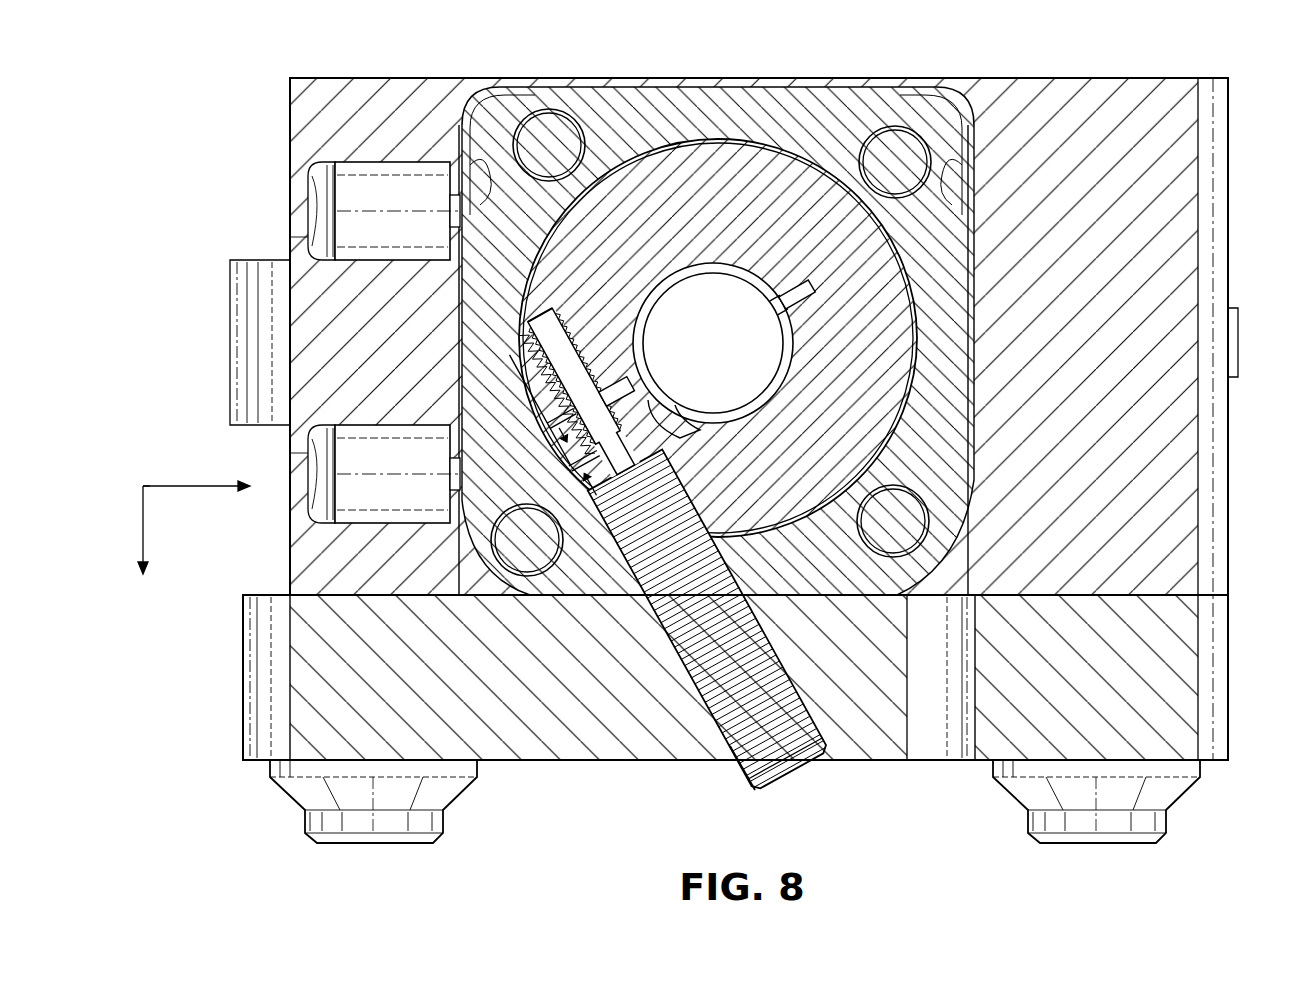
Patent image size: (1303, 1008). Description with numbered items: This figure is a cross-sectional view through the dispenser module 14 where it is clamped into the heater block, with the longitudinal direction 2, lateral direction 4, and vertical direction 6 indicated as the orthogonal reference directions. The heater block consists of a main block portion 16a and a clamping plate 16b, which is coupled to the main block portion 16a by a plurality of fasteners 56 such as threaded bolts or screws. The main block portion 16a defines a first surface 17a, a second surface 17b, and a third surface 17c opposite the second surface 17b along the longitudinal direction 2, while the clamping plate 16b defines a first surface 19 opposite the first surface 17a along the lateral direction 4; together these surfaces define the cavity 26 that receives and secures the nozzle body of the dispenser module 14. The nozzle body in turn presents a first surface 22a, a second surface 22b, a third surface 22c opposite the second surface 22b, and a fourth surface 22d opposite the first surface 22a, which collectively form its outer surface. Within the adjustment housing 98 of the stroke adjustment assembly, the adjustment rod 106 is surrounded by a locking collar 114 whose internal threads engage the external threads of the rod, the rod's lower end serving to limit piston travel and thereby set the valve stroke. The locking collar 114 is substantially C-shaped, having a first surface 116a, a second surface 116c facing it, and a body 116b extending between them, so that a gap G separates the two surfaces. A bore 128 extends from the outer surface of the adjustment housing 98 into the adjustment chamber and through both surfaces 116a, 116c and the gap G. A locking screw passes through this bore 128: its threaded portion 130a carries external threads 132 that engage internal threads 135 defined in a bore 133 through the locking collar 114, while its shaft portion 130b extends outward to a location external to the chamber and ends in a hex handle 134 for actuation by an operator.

The dispenser module 14 is at (842, 614).
The main block portion 16a is at (1150, 185).
The clamping plate 16b is at (1150, 685).
The first surface 17a is at (775, 92).
The second surface 17b is at (465, 178).
The third surface 17c is at (962, 435).
The first surface 19 is at (602, 593).
The first surface 22a is at (680, 80).
The second surface 22b is at (448, 345).
The third surface 22c is at (965, 302).
The fourth surface 22d is at (618, 598).
The cavity 26 is at (947, 570).
The fasteners 56 is at (373, 830).
The adjustment housing 98 is at (832, 110).
The adjustment rod 106 is at (697, 351).
The locking collar 114 is at (709, 224).
The first surface 116a is at (626, 380).
The body 116b is at (808, 295).
The second surface 116c is at (630, 405).
The bore 128 is at (745, 577).
The threaded portion 130a is at (718, 665).
The shaft portion 130b is at (535, 430).
The external threads 132 is at (570, 312).
The bore 133 is at (532, 305).
The hex handle 134 is at (752, 775).
The internal threads 135 is at (522, 368).
The gap G is at (565, 461).
The longitudinal direction 2 is at (196, 473).
The lateral direction 4 is at (134, 530).
The vertical direction 6 is at (149, 471).